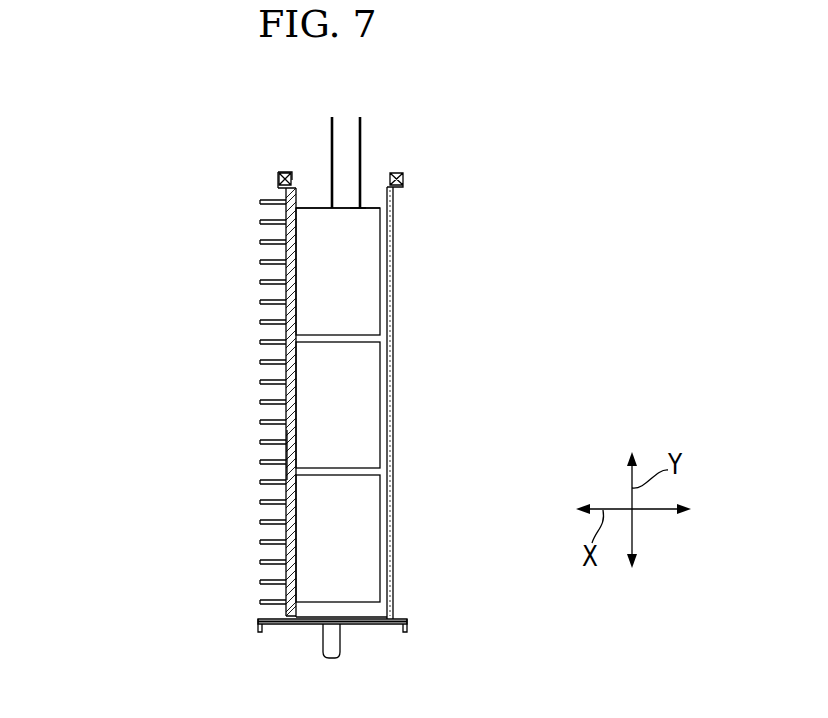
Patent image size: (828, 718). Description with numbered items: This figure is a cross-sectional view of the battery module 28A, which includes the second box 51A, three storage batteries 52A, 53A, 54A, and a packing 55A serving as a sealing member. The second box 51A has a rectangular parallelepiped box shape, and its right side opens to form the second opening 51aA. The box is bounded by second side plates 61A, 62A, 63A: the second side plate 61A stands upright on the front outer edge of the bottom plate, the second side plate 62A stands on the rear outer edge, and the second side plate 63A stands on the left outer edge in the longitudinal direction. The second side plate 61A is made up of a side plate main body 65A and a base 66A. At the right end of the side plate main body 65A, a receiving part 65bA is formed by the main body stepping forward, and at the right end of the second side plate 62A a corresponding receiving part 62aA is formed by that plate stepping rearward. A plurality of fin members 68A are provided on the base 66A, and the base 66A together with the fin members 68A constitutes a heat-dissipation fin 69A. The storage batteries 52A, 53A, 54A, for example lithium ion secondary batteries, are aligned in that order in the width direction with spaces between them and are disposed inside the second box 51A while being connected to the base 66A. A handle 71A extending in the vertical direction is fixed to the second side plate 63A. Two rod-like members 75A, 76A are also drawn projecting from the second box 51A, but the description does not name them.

The battery module 28A is at (190, 131).
The second box 51A is at (428, 206).
The second opening 51aA is at (368, 196).
The storage battery 52A is at (370, 528).
The storage battery 53A is at (370, 433).
The storage battery 54A is at (362, 305).
The packing 55A is at (289, 178).
The second side plate 61A is at (278, 187).
The side plate main body 65A is at (287, 402).
The receiving part 65bA is at (280, 180).
The second side plate 62A is at (393, 287).
The receiving part 62aA is at (401, 173).
The second side plate 63A is at (373, 624).
The base 66A is at (293, 452).
The fin member 68A is at (267, 483).
The heat-dissipation fin 69A is at (182, 432).
The handle 71A is at (328, 653).
The first rod 75A is at (361, 132).
The second rod 76A is at (331, 132).